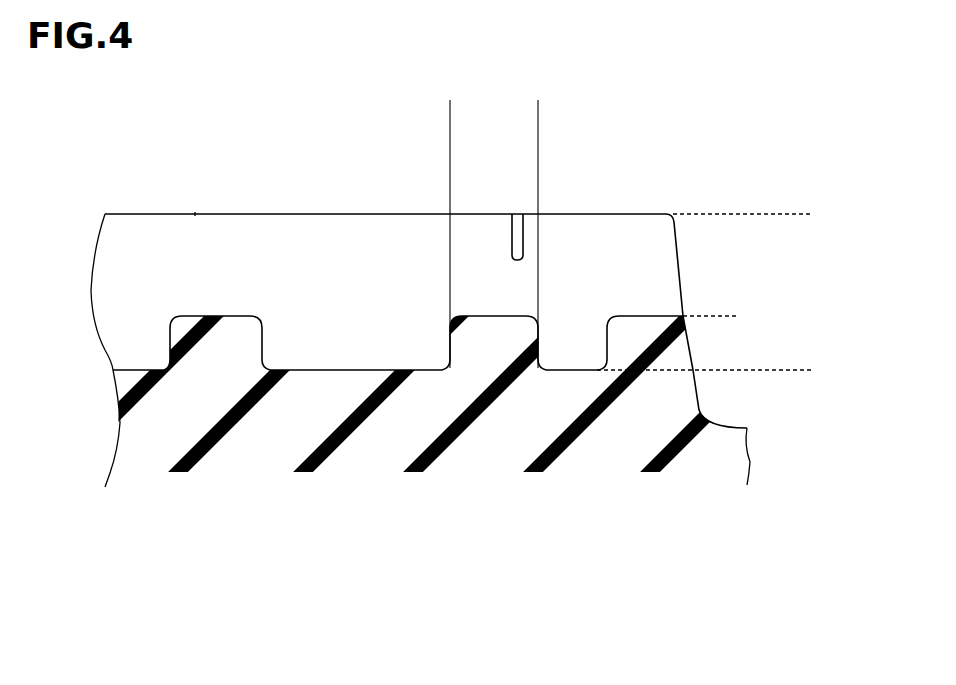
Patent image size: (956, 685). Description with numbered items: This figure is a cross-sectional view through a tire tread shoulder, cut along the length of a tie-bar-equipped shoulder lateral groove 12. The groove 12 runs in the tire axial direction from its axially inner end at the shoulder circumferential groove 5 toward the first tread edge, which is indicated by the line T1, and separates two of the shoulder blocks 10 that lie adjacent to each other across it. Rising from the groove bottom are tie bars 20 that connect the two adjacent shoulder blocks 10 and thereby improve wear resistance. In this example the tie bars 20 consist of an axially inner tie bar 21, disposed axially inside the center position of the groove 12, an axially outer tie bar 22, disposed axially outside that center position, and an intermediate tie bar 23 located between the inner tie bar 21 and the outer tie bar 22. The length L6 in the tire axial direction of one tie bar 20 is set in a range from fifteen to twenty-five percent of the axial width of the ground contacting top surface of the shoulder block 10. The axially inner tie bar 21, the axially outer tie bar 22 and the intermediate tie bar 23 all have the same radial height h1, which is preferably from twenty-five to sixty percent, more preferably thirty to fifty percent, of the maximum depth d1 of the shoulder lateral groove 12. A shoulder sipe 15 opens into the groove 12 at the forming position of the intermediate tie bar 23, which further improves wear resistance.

The shoulder block 10 is at (688, 168).
The tie-bar-equipped shoulder lateral groove 12 is at (318, 256).
The shoulder sipe 15 is at (503, 232).
The tie bars 20 is at (602, 535).
The axially inner tie bar 21 is at (630, 342).
The axially outer tie bar 22 is at (223, 343).
The intermediate tie bar 23 is at (493, 347).
The shoulder circumferential groove 5 is at (724, 404).
The tire width center line T1 is at (195, 214).
The length in the tire axial direction of one tie bar L6 is at (450, 108).
The maximum depth of the shoulder lateral groove d1 is at (807, 214).
The radial height h1 is at (732, 316).